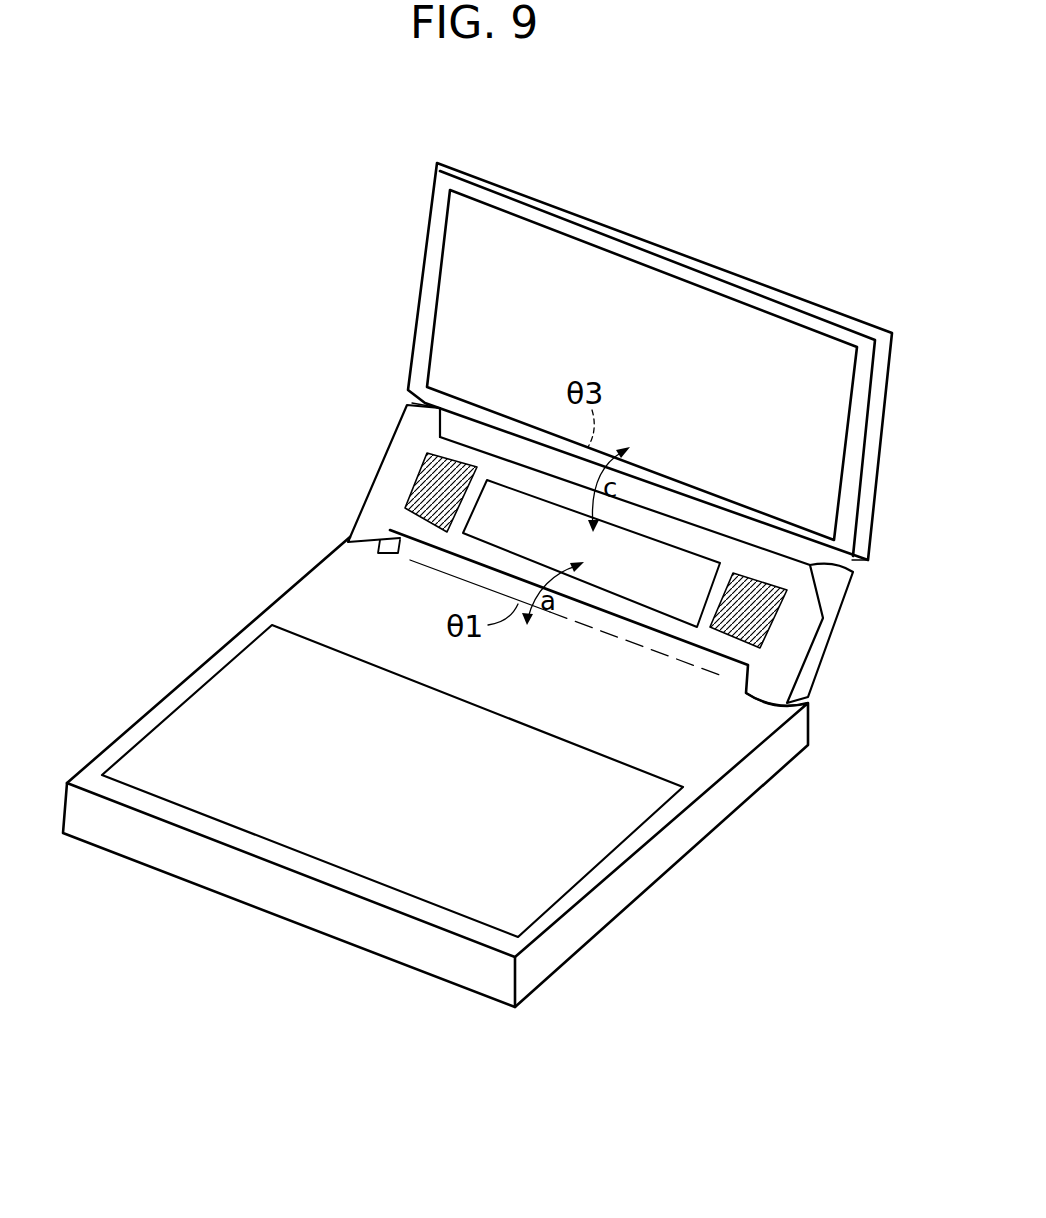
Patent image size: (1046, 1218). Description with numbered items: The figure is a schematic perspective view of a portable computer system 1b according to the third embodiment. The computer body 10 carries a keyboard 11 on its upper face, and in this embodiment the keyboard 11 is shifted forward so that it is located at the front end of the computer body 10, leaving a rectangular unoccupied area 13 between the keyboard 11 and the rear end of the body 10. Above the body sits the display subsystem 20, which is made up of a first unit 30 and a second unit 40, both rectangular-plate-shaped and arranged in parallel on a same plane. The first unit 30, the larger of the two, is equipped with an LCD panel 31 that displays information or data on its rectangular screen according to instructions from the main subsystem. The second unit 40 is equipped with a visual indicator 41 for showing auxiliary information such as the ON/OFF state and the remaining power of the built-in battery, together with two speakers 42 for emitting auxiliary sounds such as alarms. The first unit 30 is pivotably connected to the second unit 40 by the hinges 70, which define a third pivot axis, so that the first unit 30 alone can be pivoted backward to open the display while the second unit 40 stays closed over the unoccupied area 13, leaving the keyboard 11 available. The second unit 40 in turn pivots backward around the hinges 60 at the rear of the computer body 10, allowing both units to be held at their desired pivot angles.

The portable computer system 1b is at (173, 929).
The computer body 10 is at (630, 892).
The keyboard 11 is at (615, 815).
The rectangular unoccupied area 13 is at (690, 746).
The display subsystem 20 is at (372, 128).
The first unit 30 is at (428, 220).
The LCD panel 31 is at (446, 307).
The second unit 40 is at (386, 438).
The visual indicator 41 is at (492, 505).
The speakers 42 is at (422, 500).
The hinges 60 is at (348, 540).
The hinges 70 is at (428, 420).